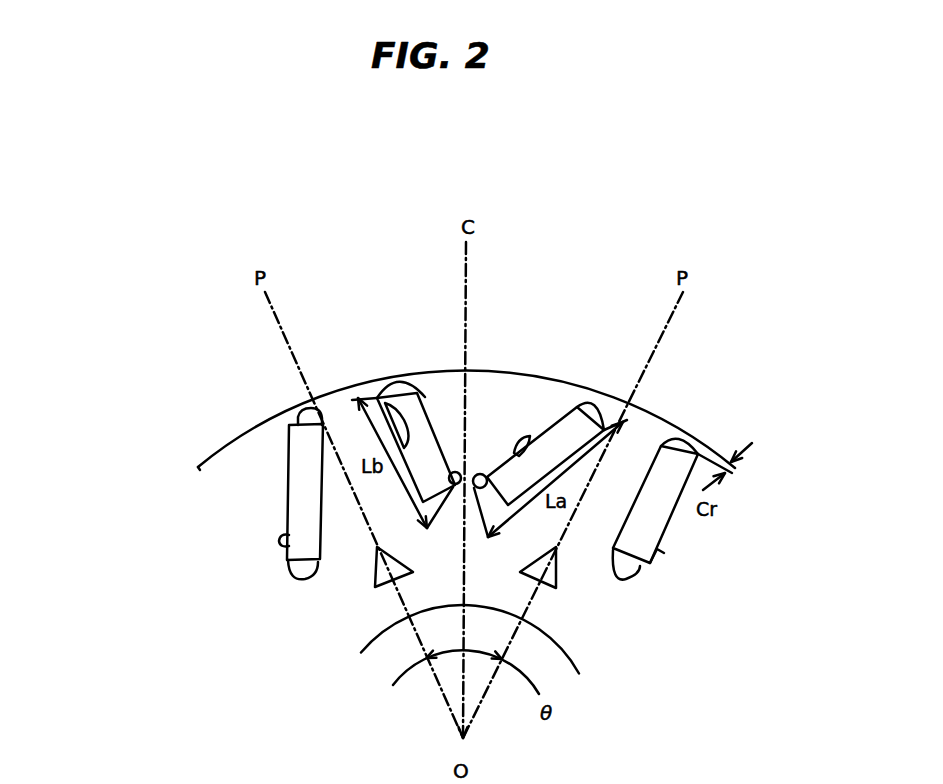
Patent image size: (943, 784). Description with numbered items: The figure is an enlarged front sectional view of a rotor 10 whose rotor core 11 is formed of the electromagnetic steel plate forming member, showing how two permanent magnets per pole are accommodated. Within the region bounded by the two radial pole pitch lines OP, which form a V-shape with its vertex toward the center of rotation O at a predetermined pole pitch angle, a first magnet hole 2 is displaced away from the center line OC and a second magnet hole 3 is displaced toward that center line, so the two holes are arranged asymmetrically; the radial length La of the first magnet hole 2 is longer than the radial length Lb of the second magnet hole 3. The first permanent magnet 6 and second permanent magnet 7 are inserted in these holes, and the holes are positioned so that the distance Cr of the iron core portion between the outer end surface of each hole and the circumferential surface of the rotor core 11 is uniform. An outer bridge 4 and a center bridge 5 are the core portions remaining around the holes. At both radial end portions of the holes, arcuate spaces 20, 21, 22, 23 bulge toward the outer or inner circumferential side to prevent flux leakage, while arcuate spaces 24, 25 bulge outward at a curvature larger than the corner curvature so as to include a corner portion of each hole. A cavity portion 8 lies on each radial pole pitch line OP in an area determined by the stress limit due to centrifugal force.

The first magnet hole 2 is at (527, 437).
The second magnet hole 3 is at (382, 410).
The outer bridge 4 is at (388, 381).
The center bridge 5 is at (478, 470).
The first permanent magnet 6 is at (567, 432).
The second permanent magnet 7 is at (408, 423).
The cavity portion 8 is at (377, 572).
The rotor 10 is at (220, 413).
The rotor core 11 is at (252, 443).
The arcuate space 20 is at (700, 450).
The arcuate space 21 is at (641, 568).
The arcuate space 22 is at (287, 408).
The arcuate space 23 is at (291, 566).
The arcuate space 24 is at (663, 550).
The arcuate space 25 is at (279, 542).